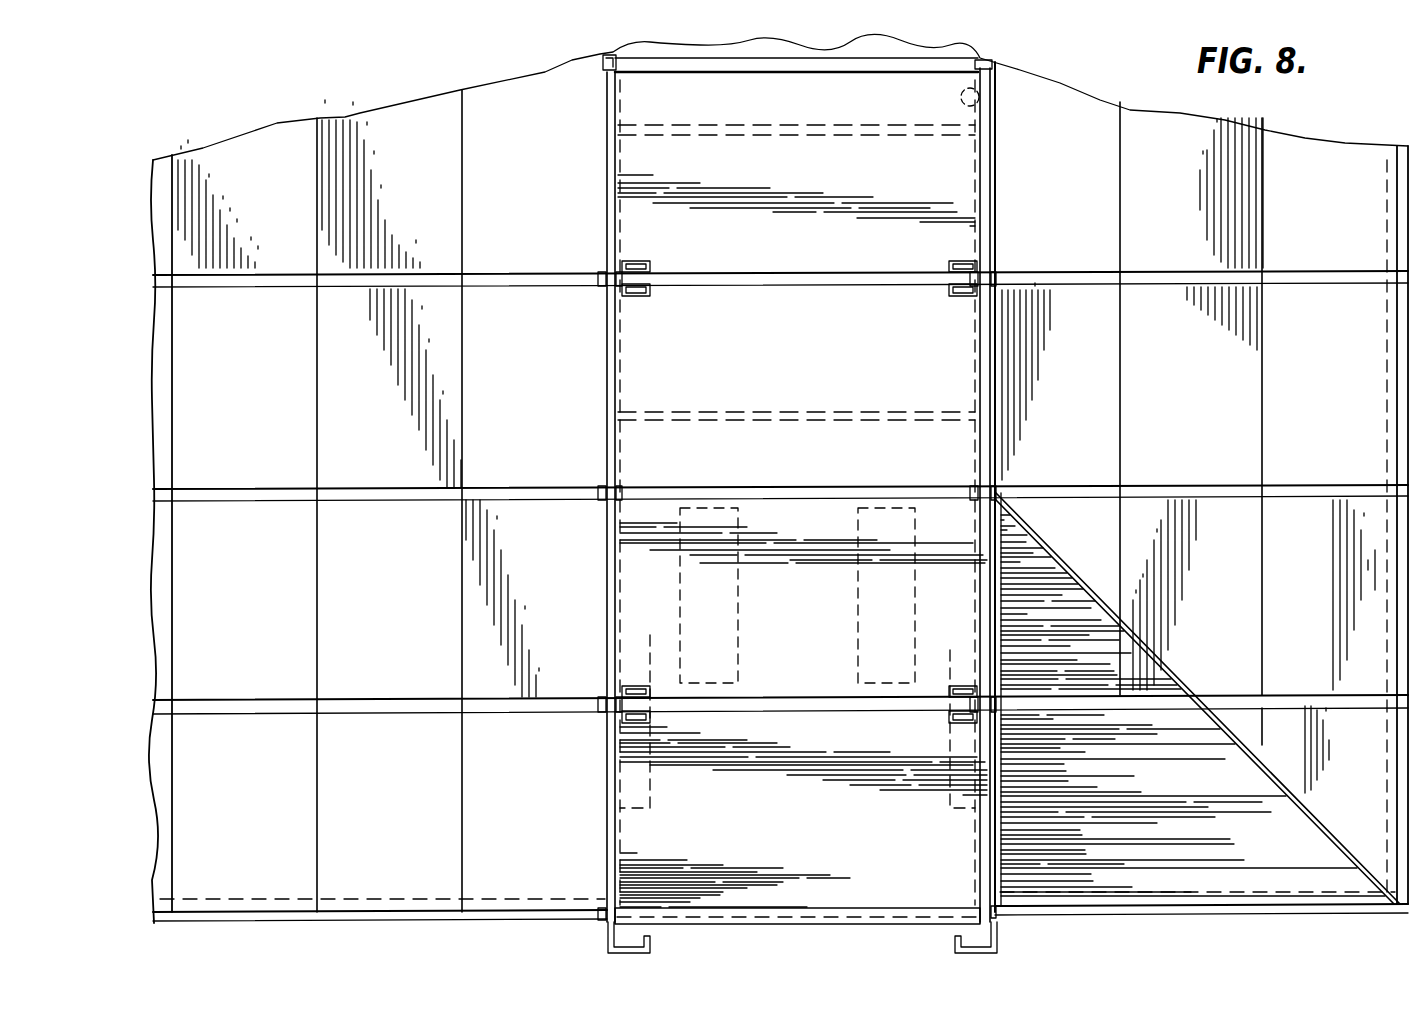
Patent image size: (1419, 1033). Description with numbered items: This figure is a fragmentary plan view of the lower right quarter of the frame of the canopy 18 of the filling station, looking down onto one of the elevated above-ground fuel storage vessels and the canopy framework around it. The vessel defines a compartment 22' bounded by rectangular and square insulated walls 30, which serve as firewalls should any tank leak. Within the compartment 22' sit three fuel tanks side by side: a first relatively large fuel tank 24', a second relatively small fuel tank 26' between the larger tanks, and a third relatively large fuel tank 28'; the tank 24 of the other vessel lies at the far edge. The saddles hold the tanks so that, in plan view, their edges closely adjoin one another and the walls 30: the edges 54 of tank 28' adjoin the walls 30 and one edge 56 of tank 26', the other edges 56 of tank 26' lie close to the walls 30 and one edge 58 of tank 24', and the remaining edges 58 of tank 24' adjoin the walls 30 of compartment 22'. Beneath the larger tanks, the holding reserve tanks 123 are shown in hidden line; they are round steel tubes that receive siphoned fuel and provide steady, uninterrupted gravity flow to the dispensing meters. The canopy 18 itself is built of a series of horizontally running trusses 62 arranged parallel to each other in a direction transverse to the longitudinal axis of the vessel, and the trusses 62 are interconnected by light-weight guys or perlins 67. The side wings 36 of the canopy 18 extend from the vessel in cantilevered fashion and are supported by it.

The canopy 18 is at (368, 916).
The compartment 22' is at (1007, 494).
The first relatively large fuel tank 24 is at (144, 542).
The first relatively large fuel tank 24' is at (608, 504).
The second relatively small fuel tank 26' is at (761, 492).
The third relatively large fuel tank 28' is at (761, 696).
The walls 30 is at (615, 540).
The side wings 36 is at (1262, 915).
The edges of tank 28' 54 is at (858, 418).
The edges of tank 26' 56 is at (923, 134).
The edges of tank 24' 58 is at (621, 120).
The trusses 62 is at (265, 287).
The guys or perlins 67 is at (462, 645).
The holding reserve tanks 123 is at (885, 638).